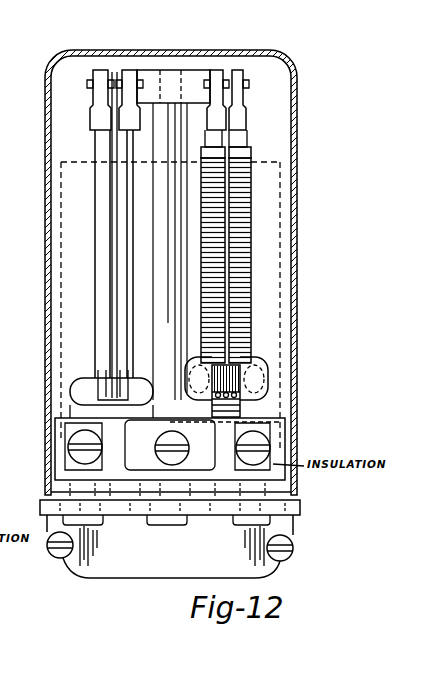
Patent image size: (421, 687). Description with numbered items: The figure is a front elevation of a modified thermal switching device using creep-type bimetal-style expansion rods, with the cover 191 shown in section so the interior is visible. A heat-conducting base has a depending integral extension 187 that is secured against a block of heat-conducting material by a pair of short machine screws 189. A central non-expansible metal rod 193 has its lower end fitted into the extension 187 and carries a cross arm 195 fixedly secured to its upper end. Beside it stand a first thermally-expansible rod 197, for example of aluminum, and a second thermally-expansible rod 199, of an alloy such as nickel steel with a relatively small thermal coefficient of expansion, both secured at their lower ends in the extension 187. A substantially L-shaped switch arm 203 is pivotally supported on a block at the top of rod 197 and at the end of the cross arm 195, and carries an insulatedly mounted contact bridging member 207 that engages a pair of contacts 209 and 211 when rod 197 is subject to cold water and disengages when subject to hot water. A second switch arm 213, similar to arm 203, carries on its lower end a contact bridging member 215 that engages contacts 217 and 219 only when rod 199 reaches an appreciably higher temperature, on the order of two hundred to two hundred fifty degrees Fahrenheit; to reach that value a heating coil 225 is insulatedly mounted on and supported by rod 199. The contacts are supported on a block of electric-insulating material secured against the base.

The depending integral extension 187 is at (97, 578).
The short machine screws 189 is at (55, 557).
The cover 191 is at (47, 97).
The central non-expansible metal rod 193 is at (145, 130).
The cross arm 195 is at (138, 70).
The first thermally-expansible rod 197 is at (95, 141).
The second thermally-expansible rod 199 is at (248, 142).
The switch arm 203 is at (110, 224).
The contact bridging member 207 is at (103, 377).
The contact 209 is at (70, 407).
The contact 211 is at (122, 408).
The second switch arm 213 is at (233, 120).
The contact bridging member 215 is at (232, 367).
The contact 217 is at (200, 402).
The contact 219 is at (268, 364).
The heating coil 225 is at (252, 212).